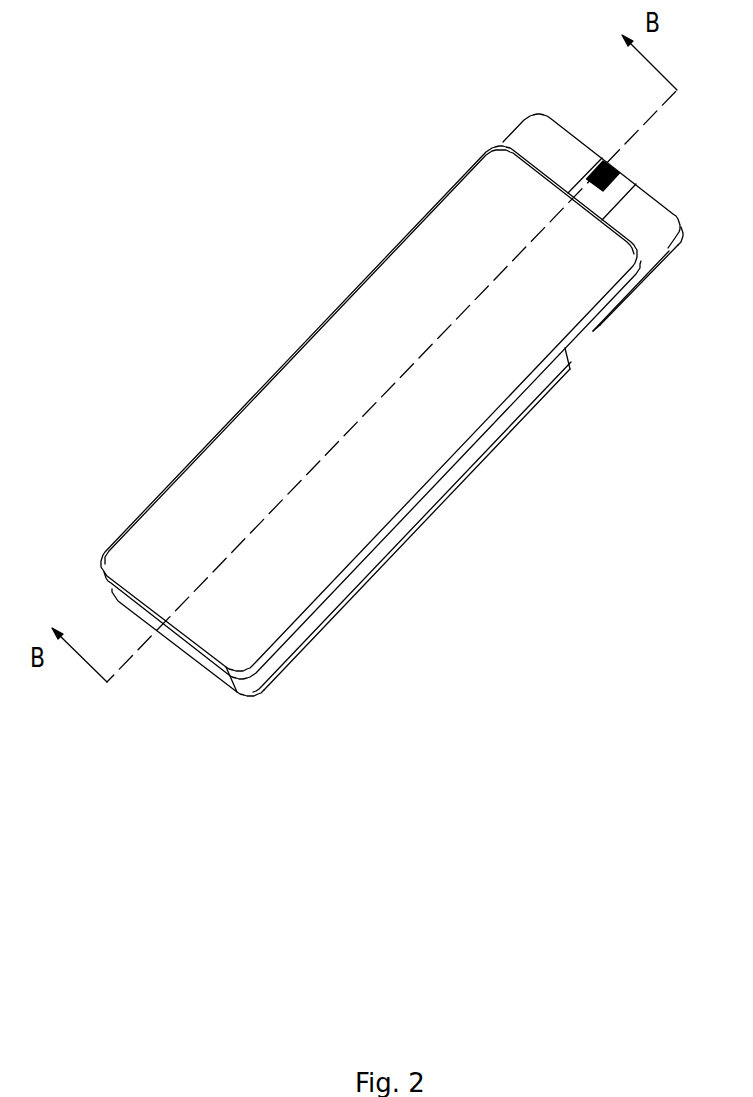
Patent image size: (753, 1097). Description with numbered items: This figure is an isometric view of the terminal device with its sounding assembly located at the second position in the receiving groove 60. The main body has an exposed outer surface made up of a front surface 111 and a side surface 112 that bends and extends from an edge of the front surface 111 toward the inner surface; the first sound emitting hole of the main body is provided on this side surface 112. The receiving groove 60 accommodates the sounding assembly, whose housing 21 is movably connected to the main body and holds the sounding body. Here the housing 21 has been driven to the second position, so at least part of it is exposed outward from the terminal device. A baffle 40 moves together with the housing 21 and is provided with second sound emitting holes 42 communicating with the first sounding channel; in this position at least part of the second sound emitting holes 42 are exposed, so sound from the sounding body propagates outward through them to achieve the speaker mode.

The housing 21 is at (638, 286).
The baffle 40 is at (622, 188).
The second sound emitting holes 42 is at (621, 166).
The receiving groove 60 is at (572, 360).
The front surface 111 is at (350, 530).
The side surface 112 is at (433, 513).